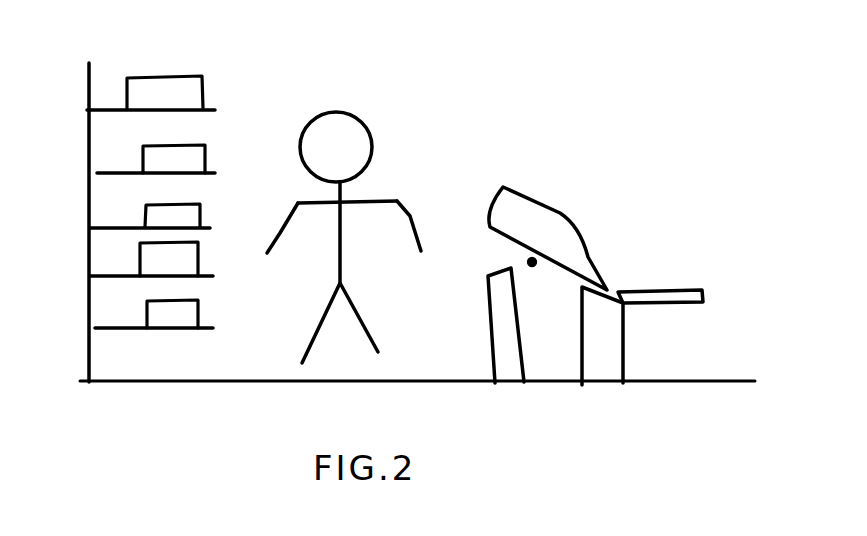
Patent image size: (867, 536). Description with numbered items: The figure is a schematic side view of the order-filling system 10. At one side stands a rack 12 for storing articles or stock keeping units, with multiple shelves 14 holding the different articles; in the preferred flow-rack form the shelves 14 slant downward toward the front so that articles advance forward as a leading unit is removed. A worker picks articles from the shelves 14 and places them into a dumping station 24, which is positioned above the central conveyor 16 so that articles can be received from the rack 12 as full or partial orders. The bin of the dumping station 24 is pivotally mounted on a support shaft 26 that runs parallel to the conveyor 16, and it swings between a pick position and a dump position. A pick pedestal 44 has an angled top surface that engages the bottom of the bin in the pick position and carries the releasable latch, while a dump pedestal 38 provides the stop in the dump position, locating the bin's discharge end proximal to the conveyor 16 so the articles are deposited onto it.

The order-filling system 10 is at (563, 118).
The rack 12 is at (111, 70).
The shelf 14 is at (207, 108).
The central conveyor 16 is at (697, 288).
The dumping station 24 is at (568, 208).
The support shaft 26 is at (532, 266).
The dump pedestal 38 is at (615, 360).
The pick pedestal 44 is at (500, 358).